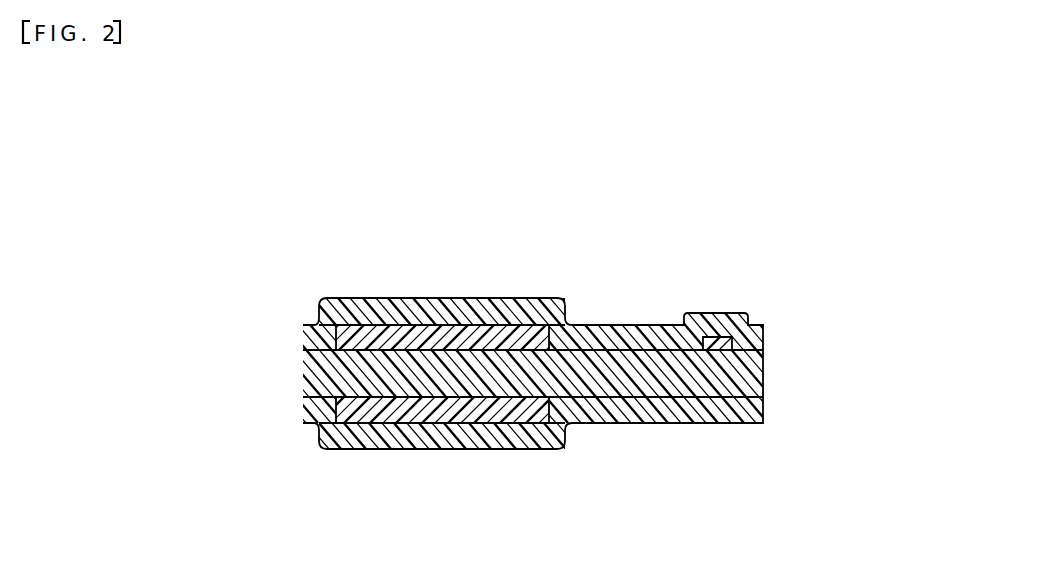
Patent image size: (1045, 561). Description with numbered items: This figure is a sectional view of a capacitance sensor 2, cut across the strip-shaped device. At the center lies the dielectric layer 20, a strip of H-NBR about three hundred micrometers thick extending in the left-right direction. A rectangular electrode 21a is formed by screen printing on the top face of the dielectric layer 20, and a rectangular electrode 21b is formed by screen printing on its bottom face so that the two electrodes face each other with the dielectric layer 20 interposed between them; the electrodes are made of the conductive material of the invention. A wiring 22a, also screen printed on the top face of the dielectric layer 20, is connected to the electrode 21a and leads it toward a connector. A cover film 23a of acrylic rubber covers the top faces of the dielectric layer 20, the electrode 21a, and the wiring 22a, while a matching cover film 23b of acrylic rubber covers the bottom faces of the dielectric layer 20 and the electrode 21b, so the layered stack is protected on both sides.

The capacitance sensor 2 is at (647, 183).
The dielectric layer 20 is at (313, 374).
The electrode 21a is at (482, 332).
The electrode 21b is at (480, 415).
The wiring 22a is at (717, 342).
The cover film 23a is at (373, 312).
The cover film 23b is at (375, 437).